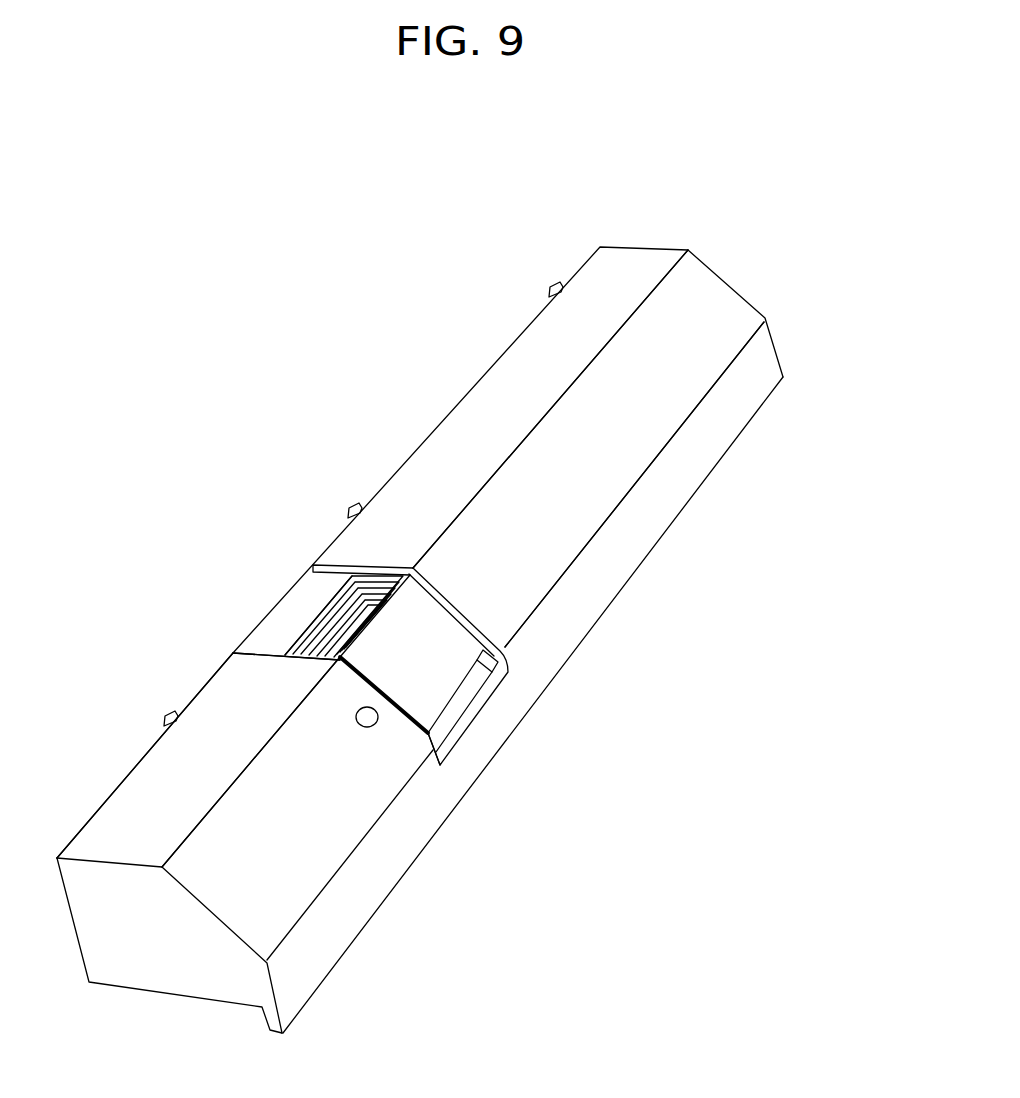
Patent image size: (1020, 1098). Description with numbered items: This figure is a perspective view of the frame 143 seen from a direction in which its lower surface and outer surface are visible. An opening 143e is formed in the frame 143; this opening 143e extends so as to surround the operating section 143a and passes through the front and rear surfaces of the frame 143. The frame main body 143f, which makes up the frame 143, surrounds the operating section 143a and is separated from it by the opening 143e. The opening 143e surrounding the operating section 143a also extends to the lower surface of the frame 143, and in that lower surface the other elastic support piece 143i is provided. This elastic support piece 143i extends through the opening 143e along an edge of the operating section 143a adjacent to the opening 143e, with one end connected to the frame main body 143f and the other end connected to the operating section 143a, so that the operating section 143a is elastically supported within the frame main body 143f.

The frame 143 is at (785, 319).
The elastic support piece 143i is at (318, 647).
The operating section 143a is at (418, 672).
The opening 143e is at (323, 627).
The frame main body 143f is at (512, 585).